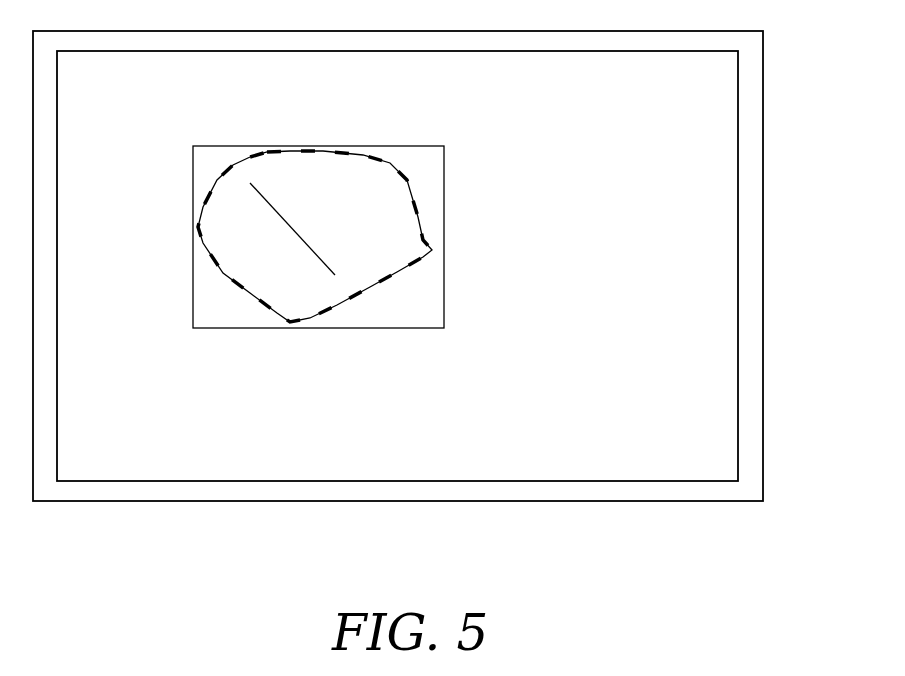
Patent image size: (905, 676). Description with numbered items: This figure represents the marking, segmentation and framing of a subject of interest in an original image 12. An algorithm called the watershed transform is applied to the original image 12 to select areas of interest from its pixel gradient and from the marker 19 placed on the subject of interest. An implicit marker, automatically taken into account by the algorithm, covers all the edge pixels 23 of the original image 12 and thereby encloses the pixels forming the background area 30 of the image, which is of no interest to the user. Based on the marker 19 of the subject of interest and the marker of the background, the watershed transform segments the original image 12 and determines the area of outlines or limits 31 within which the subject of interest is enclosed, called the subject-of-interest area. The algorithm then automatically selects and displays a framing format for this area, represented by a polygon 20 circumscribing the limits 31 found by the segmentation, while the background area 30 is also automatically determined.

The original image 12 is at (470, 502).
The edge pixels 23 is at (738, 388).
The background area 30 is at (655, 190).
The polygon 20 is at (417, 147).
The limits of the subject-of-interest area 31 is at (233, 165).
The marker 19 is at (268, 203).